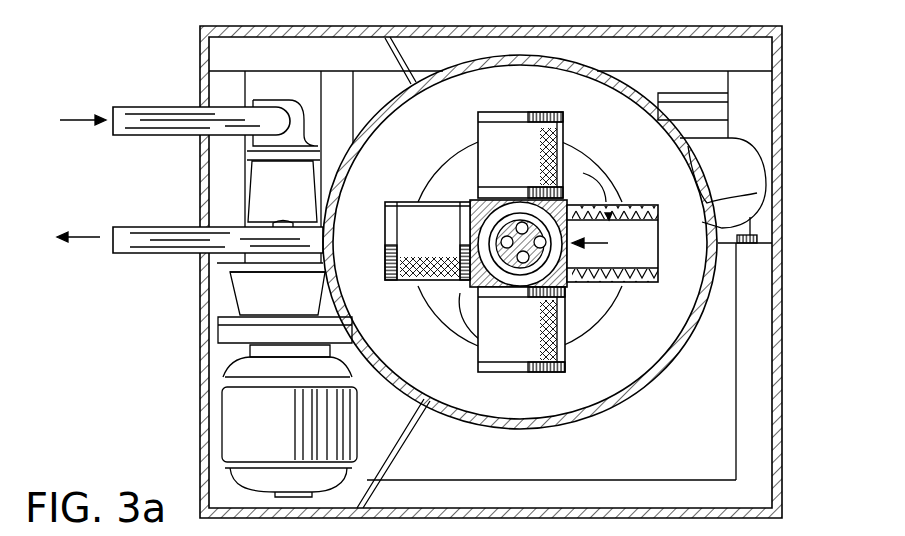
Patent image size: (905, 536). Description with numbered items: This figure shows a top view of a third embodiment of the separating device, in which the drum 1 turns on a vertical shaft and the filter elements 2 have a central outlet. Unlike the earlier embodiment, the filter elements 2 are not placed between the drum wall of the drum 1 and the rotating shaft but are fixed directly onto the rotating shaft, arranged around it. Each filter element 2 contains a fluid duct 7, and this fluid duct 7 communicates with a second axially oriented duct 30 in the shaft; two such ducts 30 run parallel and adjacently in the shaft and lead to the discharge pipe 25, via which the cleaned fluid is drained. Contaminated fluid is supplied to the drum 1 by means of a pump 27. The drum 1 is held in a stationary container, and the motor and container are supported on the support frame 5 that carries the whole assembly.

The drum 1 is at (742, 192).
The filter element 2 is at (502, 137).
The support frame 5 is at (752, 495).
The fluid duct 7 is at (585, 228).
The discharge pipe 25 is at (165, 254).
The pump 27 is at (270, 200).
The second axially oriented duct 30 is at (562, 145).